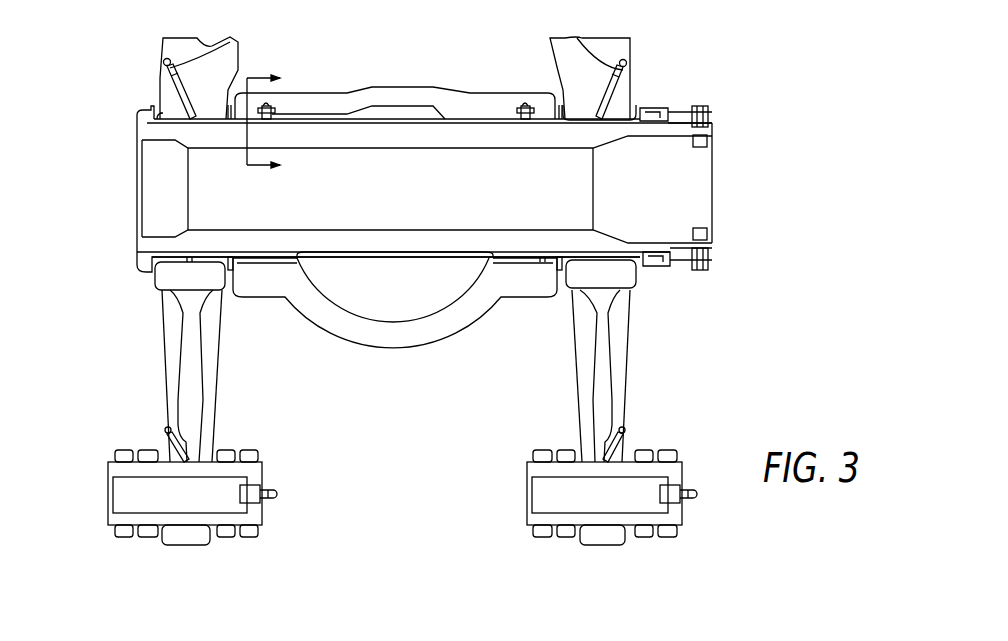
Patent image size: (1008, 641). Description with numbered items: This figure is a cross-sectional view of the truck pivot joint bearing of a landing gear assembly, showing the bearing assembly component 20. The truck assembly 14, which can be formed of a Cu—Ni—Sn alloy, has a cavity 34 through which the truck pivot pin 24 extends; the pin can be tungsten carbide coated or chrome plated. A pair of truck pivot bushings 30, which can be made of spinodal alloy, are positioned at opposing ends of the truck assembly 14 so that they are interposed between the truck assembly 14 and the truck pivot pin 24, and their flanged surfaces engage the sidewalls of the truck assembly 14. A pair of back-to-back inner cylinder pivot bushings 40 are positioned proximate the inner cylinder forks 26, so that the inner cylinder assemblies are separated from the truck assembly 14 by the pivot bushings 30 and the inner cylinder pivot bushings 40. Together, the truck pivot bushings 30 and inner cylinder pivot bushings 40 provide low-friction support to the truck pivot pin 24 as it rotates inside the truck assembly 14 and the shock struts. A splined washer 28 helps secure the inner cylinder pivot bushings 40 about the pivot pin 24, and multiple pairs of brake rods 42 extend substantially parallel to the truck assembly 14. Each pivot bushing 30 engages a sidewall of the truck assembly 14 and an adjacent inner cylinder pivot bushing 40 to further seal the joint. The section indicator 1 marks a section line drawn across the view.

The section line 1- 1 is at (275, 120).
The truck assembly 14 is at (368, 349).
The bearing assembly component 20 is at (148, 63).
The truck pivot pin 24 is at (138, 247).
The inner cylinder forks 26 is at (166, 358).
The splined washer 28 is at (667, 102).
The truck pivot bushings 30 is at (250, 263).
The cavity 34 is at (118, 181).
The inner cylinder pivot bushings 40 is at (153, 274).
The brake rods 42 is at (652, 448).